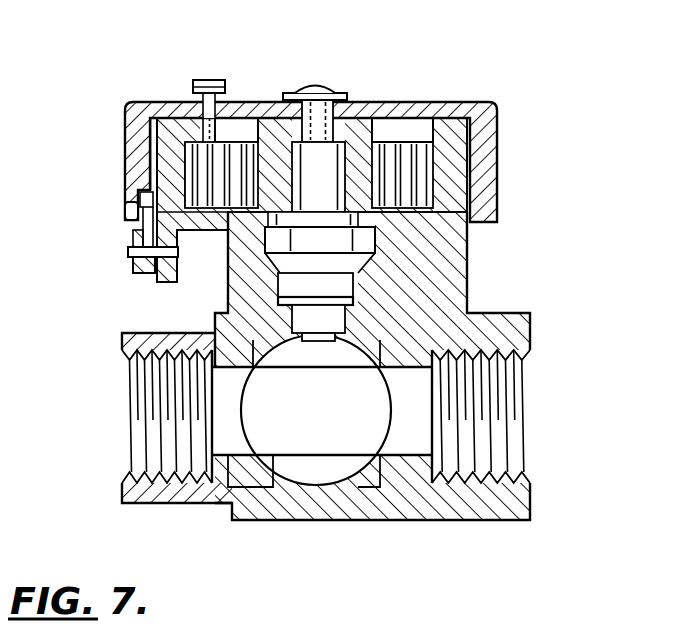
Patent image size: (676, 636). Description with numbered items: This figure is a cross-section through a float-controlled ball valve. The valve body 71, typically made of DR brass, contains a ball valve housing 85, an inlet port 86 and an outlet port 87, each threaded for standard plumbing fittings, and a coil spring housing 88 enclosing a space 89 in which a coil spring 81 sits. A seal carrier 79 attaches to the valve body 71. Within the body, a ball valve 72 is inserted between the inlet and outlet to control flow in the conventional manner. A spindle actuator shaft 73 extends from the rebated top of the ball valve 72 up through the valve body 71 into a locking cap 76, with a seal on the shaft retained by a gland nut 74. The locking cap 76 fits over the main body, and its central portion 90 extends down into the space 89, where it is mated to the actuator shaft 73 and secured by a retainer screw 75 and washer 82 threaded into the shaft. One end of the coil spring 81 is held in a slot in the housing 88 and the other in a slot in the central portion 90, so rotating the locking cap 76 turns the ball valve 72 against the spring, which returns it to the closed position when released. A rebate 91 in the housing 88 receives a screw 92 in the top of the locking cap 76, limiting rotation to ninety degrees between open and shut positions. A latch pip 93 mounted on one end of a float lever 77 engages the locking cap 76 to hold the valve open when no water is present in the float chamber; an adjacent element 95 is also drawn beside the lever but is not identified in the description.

The valve body 71 is at (477, 282).
The ball valve 72 is at (318, 472).
The spindle actuator shaft 73 is at (320, 172).
The gland nut 74 is at (360, 244).
The retainer screw 75 is at (300, 88).
The locking cap 76 is at (485, 122).
The float lever 77 is at (130, 258).
The seal carrier 79 is at (128, 487).
The coil spring 81 is at (210, 145).
The washer 82 is at (348, 94).
The ball valve housing 85 is at (403, 472).
The inlet port 86 is at (488, 398).
The outlet port 87 is at (160, 392).
The housing 88 is at (172, 170).
The coil spring housing space 89 is at (436, 170).
The central portion 90 is at (270, 148).
The rebate 91 is at (153, 120).
The screw 92 is at (201, 80).
The latch pip 93 is at (138, 208).
The clip 95 is at (128, 205).